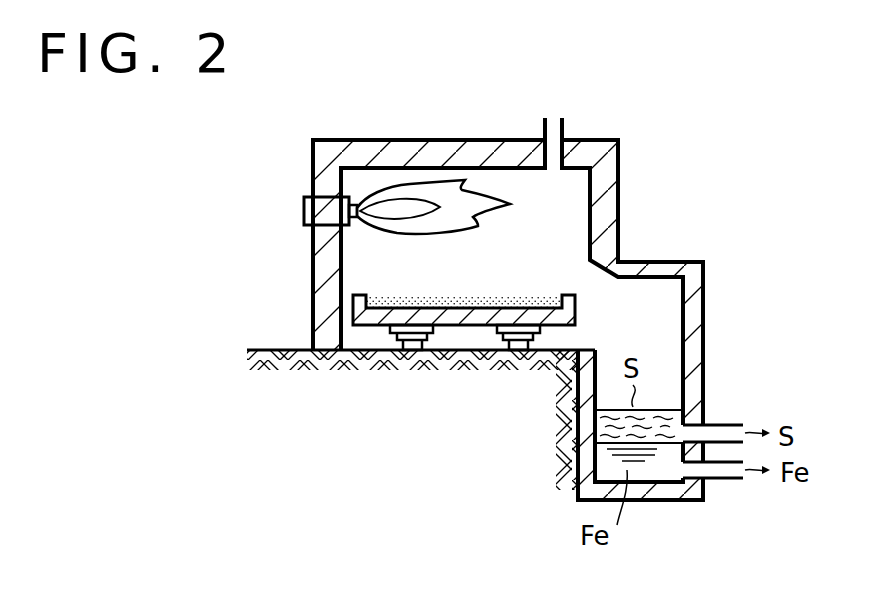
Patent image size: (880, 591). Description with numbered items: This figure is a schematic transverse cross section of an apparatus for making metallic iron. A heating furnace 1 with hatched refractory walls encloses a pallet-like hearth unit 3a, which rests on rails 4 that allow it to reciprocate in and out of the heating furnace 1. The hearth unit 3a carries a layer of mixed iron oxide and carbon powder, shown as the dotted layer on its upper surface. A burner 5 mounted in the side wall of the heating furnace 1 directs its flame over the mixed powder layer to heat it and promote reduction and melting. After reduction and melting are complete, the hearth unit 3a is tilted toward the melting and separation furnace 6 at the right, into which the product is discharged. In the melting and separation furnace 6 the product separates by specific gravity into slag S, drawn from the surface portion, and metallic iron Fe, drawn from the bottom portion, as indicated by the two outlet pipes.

The heating furnace 1 is at (313, 262).
The hearth unit 3a is at (462, 327).
The rails 4 is at (412, 352).
The burner 5 is at (304, 208).
The melting and separation furnace 6 is at (703, 327).